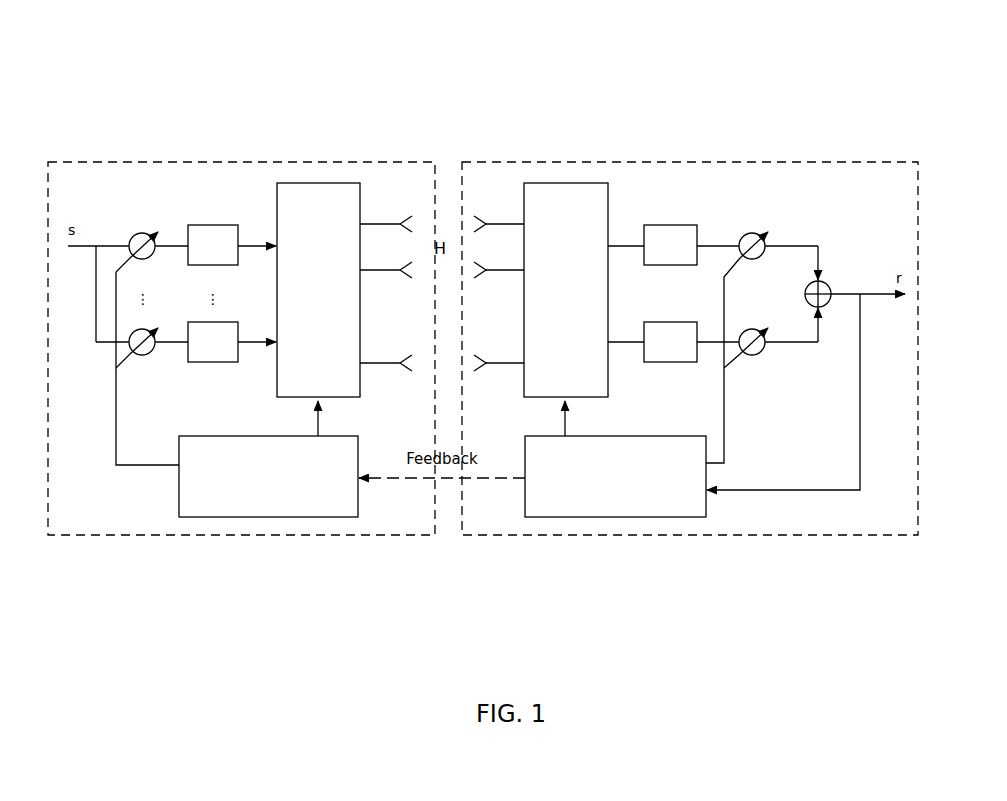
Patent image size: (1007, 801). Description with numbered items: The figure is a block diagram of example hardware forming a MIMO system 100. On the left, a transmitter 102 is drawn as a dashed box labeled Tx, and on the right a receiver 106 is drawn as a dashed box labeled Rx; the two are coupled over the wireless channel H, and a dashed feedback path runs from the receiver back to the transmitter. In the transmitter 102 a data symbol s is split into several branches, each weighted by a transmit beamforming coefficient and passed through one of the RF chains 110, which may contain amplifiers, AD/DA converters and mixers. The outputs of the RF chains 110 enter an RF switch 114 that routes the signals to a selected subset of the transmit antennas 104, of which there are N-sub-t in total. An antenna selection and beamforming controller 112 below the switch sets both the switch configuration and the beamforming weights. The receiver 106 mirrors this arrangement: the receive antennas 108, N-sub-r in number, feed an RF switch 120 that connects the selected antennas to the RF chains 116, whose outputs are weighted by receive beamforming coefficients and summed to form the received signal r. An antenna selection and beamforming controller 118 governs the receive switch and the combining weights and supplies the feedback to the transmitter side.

The MIMO system 100 is at (762, 45).
The transmitter 102 is at (139, 161).
The transmit antennas 104 is at (400, 206).
The receiver 106 is at (823, 161).
The receive antennas 108 is at (478, 206).
The RF chains 110 is at (241, 212).
The antenna selection and beamforming controller 112 is at (285, 518).
The RF switch 114 is at (320, 183).
The RF chains 116 is at (639, 211).
The antenna selection and beamforming controller 118 is at (620, 518).
The RF switch 120 is at (582, 183).